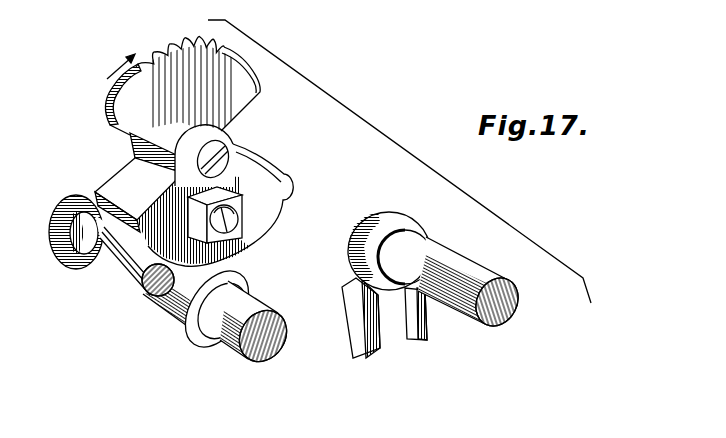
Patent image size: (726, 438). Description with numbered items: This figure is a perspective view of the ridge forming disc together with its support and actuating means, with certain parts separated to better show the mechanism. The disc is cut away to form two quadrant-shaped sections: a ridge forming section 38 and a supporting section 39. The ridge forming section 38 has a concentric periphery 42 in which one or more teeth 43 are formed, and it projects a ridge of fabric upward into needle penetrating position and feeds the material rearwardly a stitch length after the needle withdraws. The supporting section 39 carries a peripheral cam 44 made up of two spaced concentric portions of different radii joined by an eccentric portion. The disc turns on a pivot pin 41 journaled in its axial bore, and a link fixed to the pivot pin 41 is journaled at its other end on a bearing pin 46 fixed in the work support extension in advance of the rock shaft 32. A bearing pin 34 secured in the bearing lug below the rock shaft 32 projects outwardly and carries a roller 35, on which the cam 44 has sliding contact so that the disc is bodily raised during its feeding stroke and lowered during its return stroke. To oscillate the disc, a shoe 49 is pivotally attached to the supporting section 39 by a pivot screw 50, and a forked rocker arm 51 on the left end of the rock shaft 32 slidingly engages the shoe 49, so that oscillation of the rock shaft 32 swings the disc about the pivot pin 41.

The rock shaft 32 is at (480, 246).
The bearing pin 34 is at (275, 326).
The roller 35 is at (157, 315).
The ridge forming section 38 is at (213, 88).
The supporting section 39 is at (220, 248).
The pivot pin 41 is at (213, 147).
The concentric periphery 42 is at (112, 98).
The teeth 43 is at (150, 60).
The peripheral cam 44 is at (206, 205).
The bearing pin 46 is at (110, 272).
The shoe 49 is at (237, 187).
The pivot screw 50 is at (238, 223).
The forked rocker arm 51 is at (415, 326).